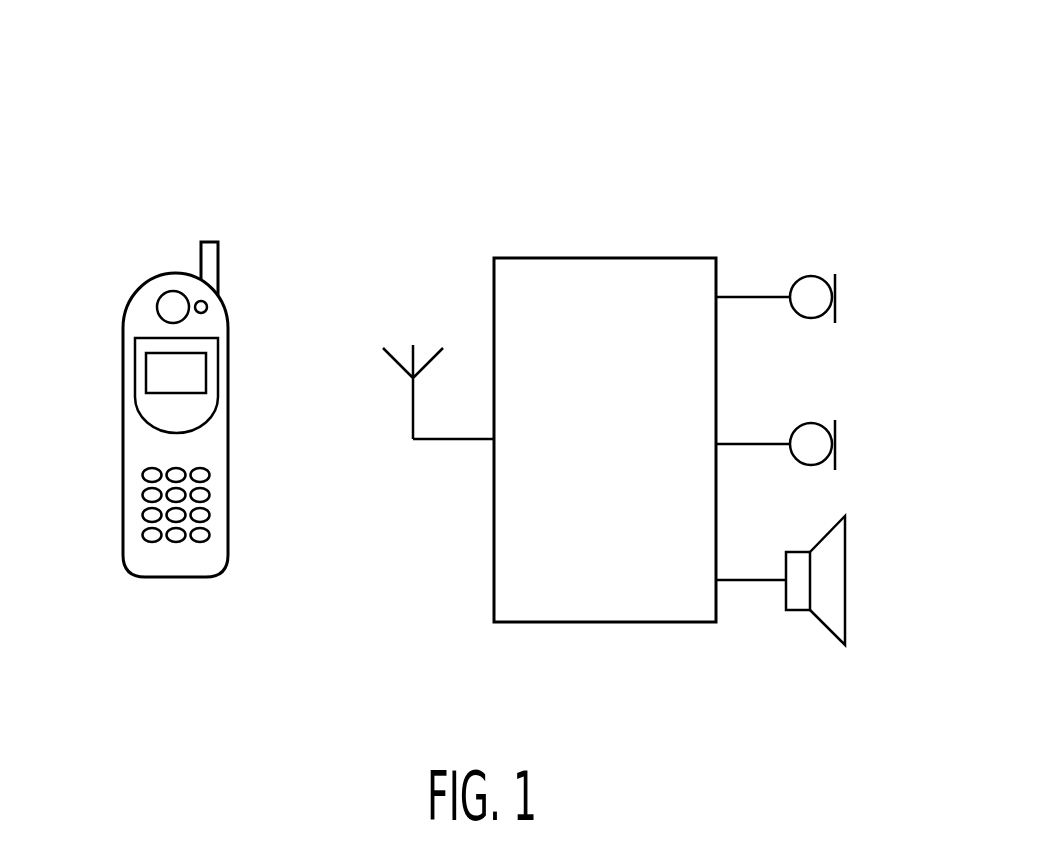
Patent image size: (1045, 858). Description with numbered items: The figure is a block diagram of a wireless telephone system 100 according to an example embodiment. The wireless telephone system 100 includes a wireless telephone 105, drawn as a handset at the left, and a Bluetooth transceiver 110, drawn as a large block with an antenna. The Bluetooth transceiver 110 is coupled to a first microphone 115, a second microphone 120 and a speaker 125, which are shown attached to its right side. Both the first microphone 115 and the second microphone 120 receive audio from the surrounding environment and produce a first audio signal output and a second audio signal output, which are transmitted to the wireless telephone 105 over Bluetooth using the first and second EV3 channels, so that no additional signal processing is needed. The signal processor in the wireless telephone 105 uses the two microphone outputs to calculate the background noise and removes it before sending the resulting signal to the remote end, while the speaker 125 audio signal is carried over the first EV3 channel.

The wireless telephone system 100 is at (84, 126).
The wireless telephone 105 is at (228, 390).
The Bluetooth transceiver 110 is at (673, 258).
The first microphone 115 is at (837, 299).
The second microphone 120 is at (837, 446).
The speaker 125 is at (845, 582).